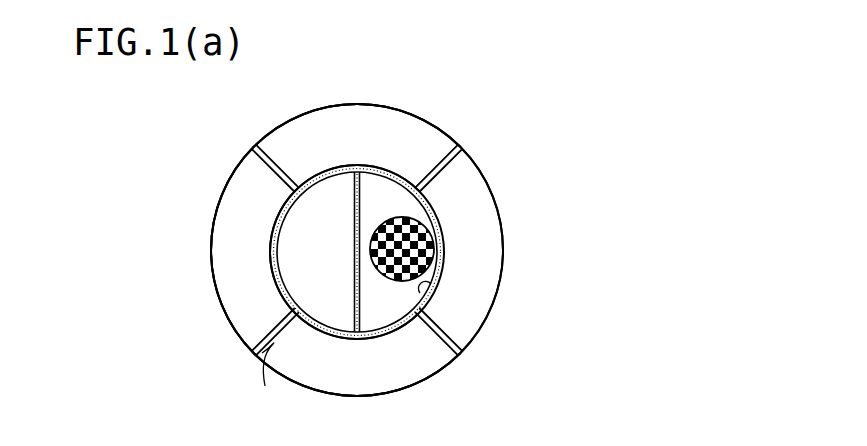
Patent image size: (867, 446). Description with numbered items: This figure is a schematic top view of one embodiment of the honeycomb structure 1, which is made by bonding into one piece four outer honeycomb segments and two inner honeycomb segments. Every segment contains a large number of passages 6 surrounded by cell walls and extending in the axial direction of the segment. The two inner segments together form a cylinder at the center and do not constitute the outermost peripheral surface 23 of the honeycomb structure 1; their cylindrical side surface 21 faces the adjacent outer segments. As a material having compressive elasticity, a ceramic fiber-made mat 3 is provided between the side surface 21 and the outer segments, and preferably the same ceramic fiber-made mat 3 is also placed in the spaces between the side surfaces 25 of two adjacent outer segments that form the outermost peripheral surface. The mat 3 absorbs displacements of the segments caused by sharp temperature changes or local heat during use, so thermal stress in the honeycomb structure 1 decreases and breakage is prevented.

The honeycomb structure 1 is at (436, 103).
The ceramic fiber-made mat 3 is at (280, 168).
The passage 6 is at (430, 221).
The side surface 21 is at (432, 296).
The outermost peripheral surface 23 is at (387, 392).
The side surface 25 is at (271, 377).